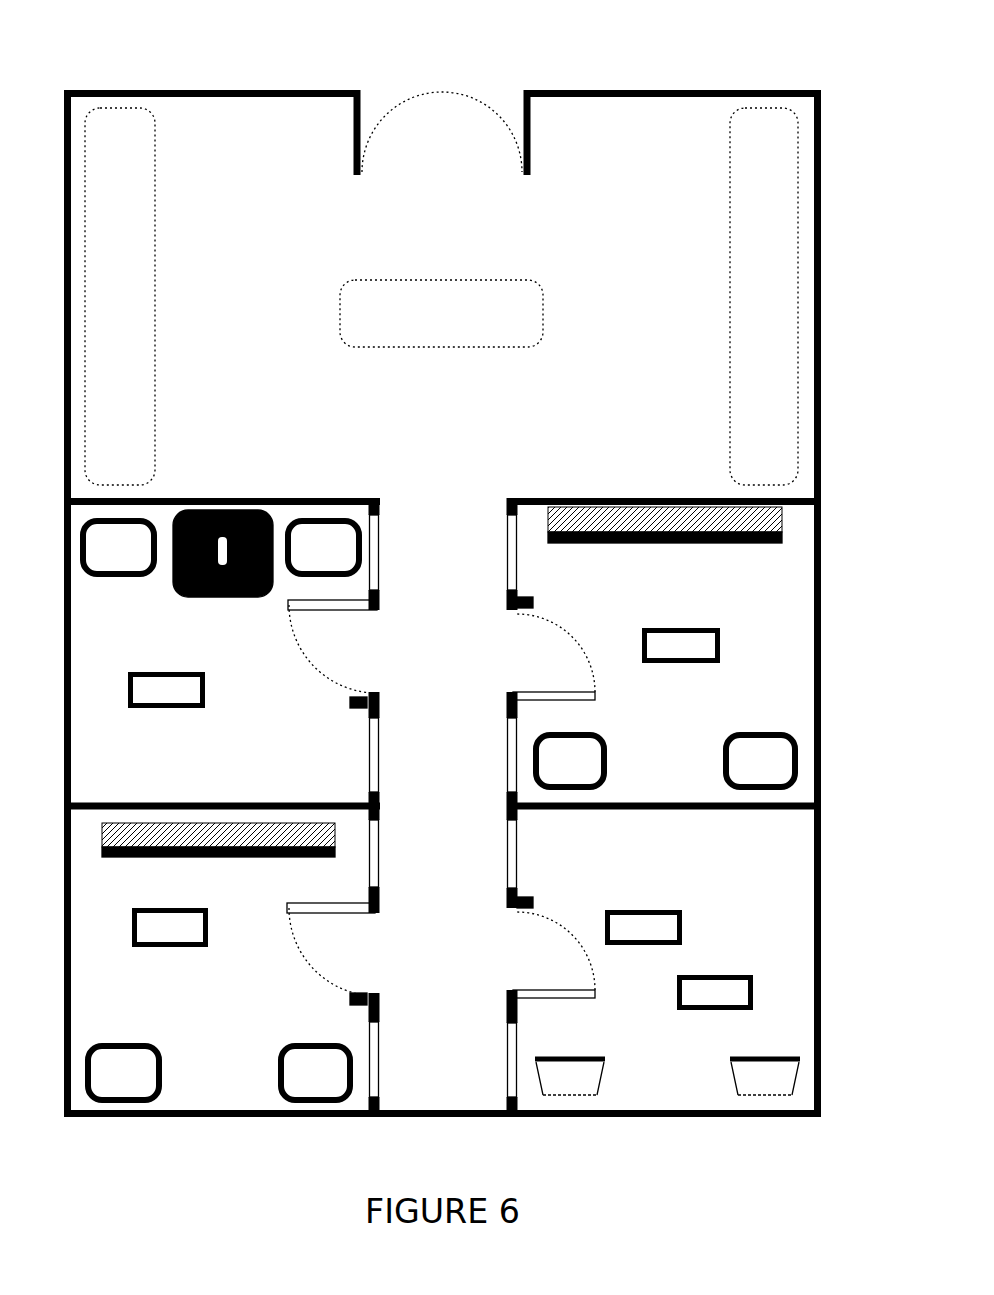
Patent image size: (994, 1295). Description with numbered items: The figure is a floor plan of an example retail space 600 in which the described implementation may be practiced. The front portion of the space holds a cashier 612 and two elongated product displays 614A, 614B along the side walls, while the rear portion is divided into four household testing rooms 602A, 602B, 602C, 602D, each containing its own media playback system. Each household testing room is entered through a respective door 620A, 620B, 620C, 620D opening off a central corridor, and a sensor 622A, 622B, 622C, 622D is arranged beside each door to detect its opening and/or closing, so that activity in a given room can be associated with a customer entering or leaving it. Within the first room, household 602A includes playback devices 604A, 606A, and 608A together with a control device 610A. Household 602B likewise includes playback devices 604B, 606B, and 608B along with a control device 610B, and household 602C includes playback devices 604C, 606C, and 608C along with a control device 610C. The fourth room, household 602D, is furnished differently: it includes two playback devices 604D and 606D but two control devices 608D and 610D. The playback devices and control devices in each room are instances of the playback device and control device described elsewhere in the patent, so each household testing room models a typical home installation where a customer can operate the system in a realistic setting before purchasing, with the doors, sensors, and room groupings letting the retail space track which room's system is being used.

The retail space 600 is at (728, 48).
The household testing room 602A is at (322, 771).
The household testing room 602B is at (765, 599).
The household testing room 602C is at (322, 1013).
The household testing room 602D is at (765, 883).
The playback device 604A is at (93, 558).
The playback device 604B is at (545, 771).
The playback device 604C is at (98, 1084).
The playback device 604D is at (545, 1091).
The playback device 606A is at (298, 558).
The playback device 606B is at (735, 771).
The playback device 606C is at (291, 1084).
The playback device 606D is at (740, 1091).
The playback device 608A is at (195, 535).
The playback device 608B is at (665, 525).
The playback device 608C is at (218, 840).
The control device 608D is at (690, 1003).
The control device 610A is at (142, 701).
The control device 610B is at (656, 657).
The control device 610C is at (145, 938).
The control device 610D is at (618, 938).
The cashier 612 is at (515, 324).
The product display 614A is at (120, 296).
The product display 614B is at (764, 296).
The door 620A is at (316, 612).
The door 620B is at (555, 690).
The door 620C is at (316, 915).
The door 620D is at (555, 989).
The sensor 622A is at (360, 696).
The sensor 622B is at (527, 611).
The sensor 622C is at (360, 994).
The sensor 622D is at (527, 910).